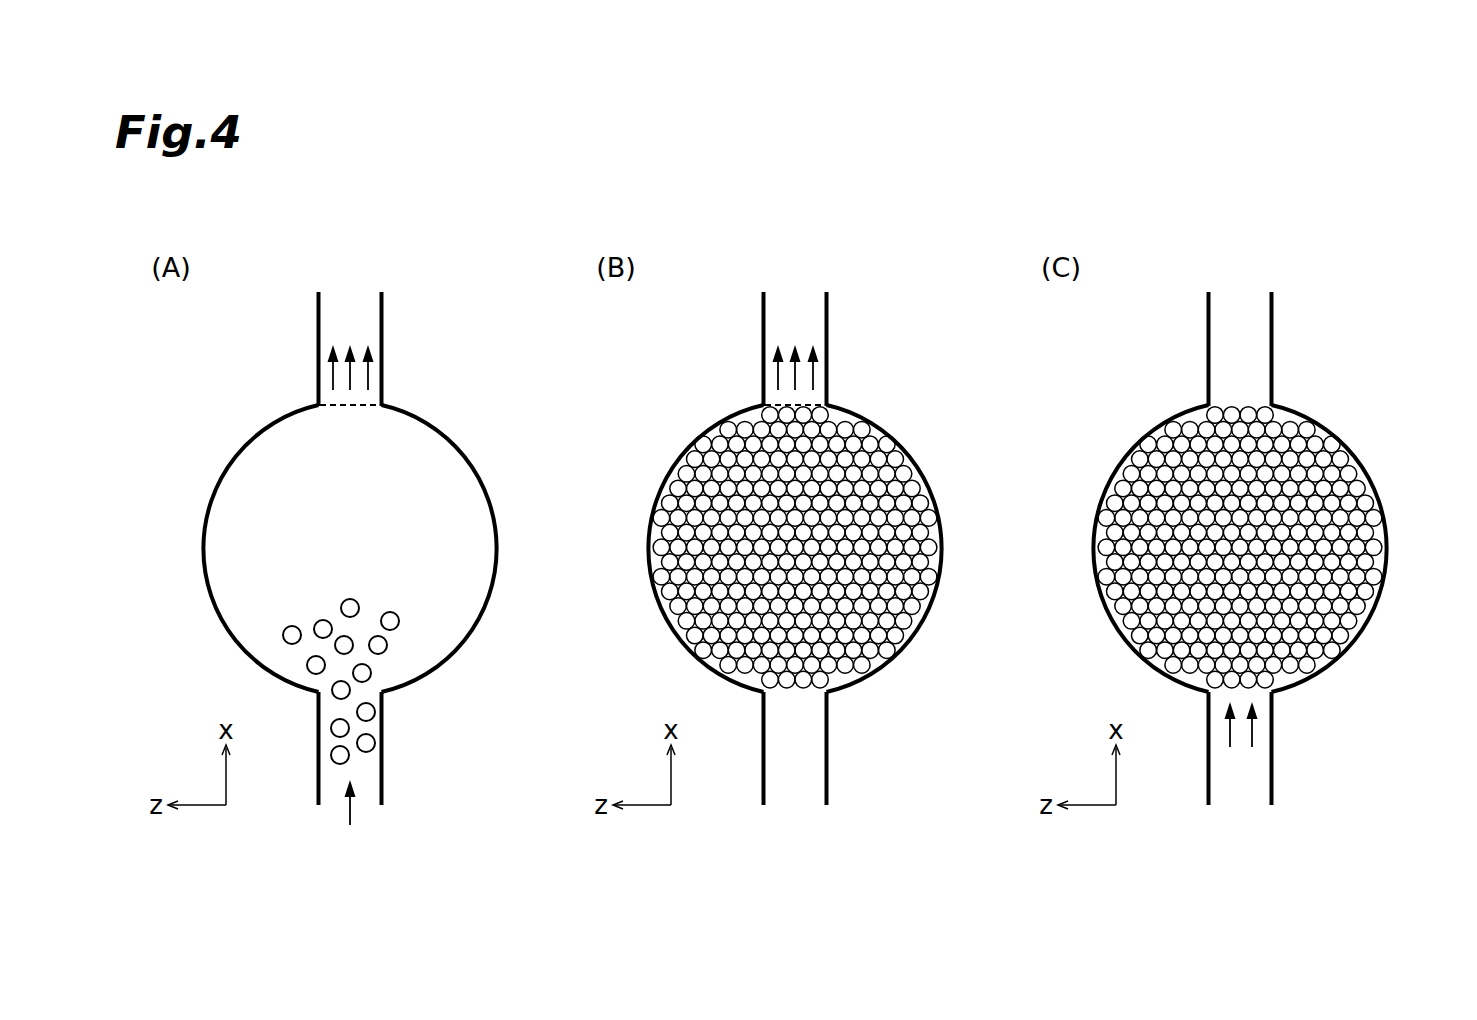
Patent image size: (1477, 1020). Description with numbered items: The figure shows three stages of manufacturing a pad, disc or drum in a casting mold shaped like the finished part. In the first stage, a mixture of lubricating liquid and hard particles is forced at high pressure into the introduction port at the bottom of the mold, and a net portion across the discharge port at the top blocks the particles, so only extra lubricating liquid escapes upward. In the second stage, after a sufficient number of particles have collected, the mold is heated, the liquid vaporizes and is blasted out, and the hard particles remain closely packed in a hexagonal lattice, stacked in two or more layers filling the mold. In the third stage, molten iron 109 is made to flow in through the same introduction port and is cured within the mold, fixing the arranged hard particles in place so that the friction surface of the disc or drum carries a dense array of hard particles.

The molten iron 109 is at (1220, 776).